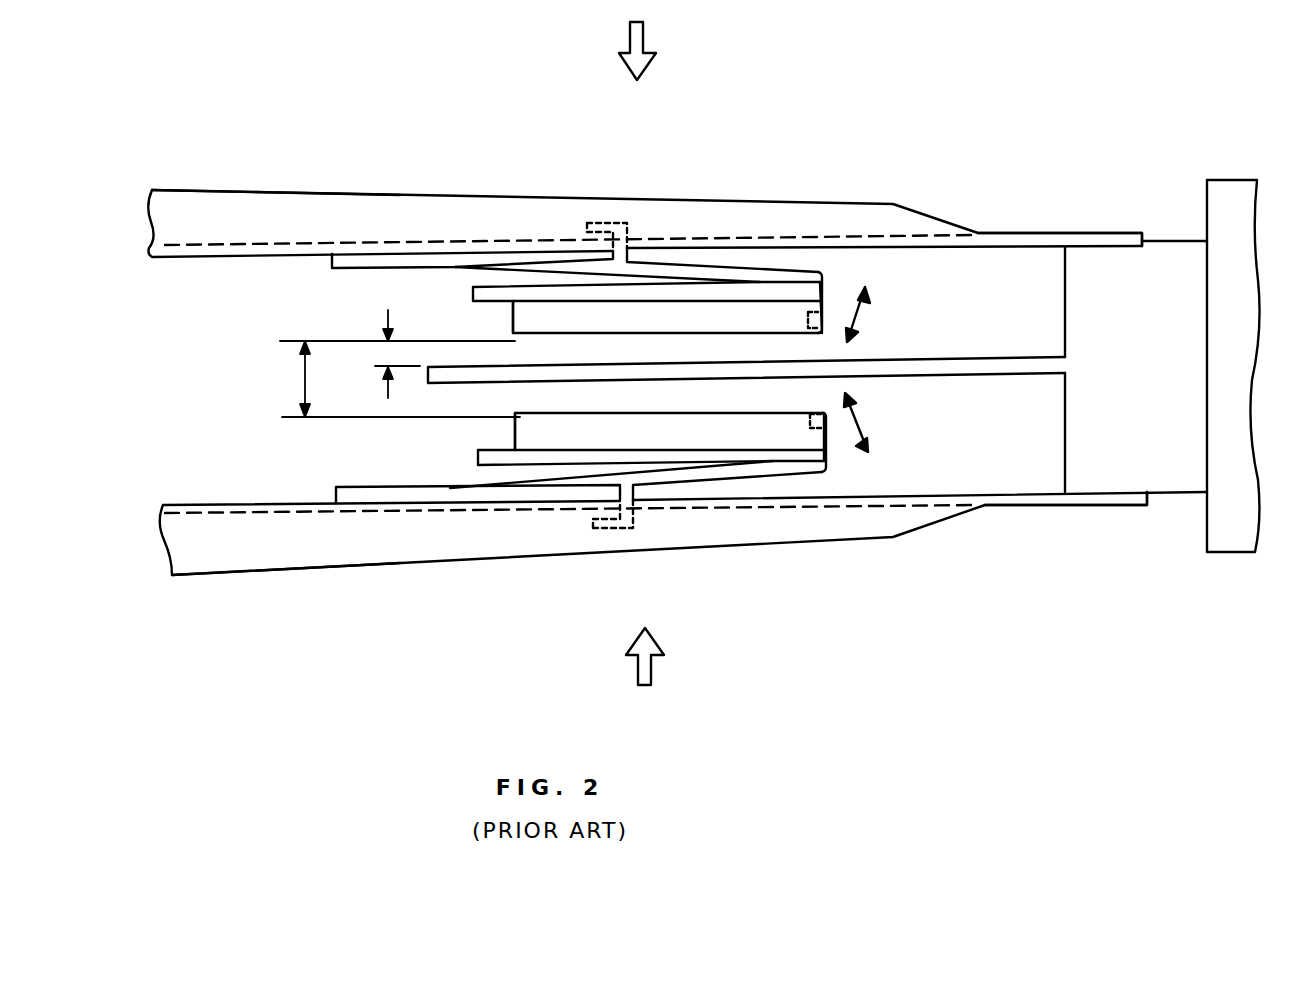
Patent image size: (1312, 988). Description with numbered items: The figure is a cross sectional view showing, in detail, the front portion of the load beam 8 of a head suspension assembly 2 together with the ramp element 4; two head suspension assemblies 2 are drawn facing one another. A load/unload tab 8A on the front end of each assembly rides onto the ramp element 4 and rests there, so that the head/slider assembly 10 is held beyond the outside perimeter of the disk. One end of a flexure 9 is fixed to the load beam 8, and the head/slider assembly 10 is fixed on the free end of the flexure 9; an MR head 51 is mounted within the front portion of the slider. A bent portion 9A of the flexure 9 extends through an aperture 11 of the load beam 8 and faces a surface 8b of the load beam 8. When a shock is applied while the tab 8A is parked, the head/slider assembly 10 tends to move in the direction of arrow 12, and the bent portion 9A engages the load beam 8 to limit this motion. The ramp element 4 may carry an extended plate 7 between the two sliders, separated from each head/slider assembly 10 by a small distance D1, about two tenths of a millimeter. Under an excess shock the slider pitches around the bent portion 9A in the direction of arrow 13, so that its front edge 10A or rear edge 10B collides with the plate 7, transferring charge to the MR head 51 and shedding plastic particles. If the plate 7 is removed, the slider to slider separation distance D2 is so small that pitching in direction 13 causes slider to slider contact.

The head suspension assembly 2 is at (283, 184).
The ramp element 4 is at (1153, 366).
The plate 7 is at (947, 365).
The load beam 8 is at (382, 203).
The load/unload tab 8A is at (1105, 235).
The surface of the load beam 8b is at (455, 243).
The flexure 9 is at (810, 280).
The bent portion 9A is at (602, 222).
The head/slider assembly 10 is at (793, 305).
The front edge 10A is at (820, 334).
The rear edge 10B is at (514, 335).
The aperture 11 is at (634, 240).
The arrow 12 is at (644, 40).
The arrow 13 is at (862, 303).
The MR head 51 is at (822, 322).
The distance D1 is at (385, 352).
The slider to slider separation distance D2 is at (389, 379).